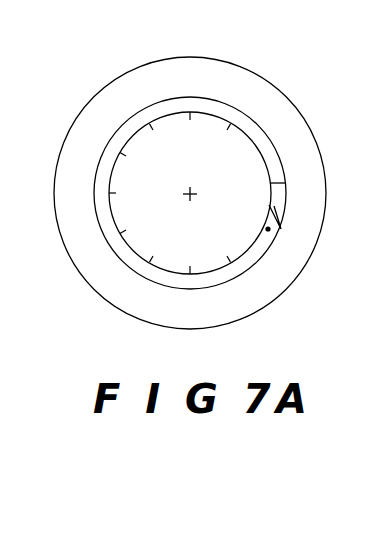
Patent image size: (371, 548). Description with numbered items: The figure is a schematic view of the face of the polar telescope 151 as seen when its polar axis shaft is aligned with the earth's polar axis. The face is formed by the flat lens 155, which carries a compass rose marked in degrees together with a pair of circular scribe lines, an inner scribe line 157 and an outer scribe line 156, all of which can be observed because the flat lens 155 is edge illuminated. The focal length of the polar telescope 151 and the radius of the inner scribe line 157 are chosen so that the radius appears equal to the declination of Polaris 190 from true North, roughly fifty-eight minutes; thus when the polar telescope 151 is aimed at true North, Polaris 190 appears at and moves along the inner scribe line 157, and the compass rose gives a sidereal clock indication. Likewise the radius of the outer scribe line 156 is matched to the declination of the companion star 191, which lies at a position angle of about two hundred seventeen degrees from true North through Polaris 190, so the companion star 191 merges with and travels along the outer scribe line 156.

The polar telescope 151 is at (305, 99).
The flat lens 155 is at (323, 156).
The inner scribe line 157 is at (264, 160).
The outer scribe line 156 is at (271, 183).
The companion star 191 is at (270, 206).
The Polaris 190 is at (267, 228).